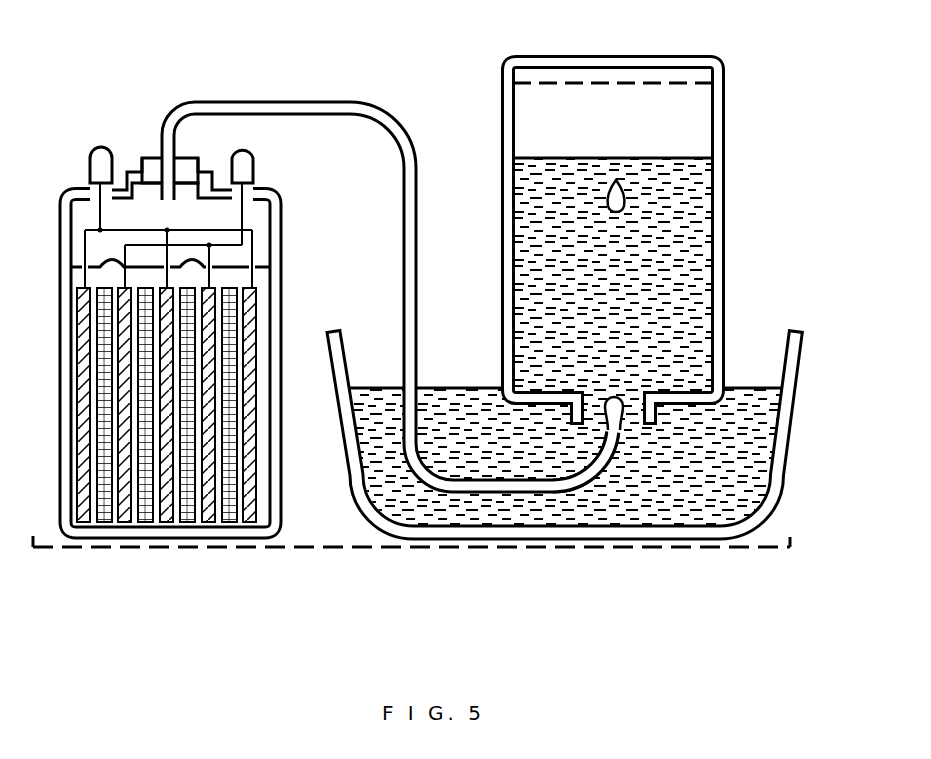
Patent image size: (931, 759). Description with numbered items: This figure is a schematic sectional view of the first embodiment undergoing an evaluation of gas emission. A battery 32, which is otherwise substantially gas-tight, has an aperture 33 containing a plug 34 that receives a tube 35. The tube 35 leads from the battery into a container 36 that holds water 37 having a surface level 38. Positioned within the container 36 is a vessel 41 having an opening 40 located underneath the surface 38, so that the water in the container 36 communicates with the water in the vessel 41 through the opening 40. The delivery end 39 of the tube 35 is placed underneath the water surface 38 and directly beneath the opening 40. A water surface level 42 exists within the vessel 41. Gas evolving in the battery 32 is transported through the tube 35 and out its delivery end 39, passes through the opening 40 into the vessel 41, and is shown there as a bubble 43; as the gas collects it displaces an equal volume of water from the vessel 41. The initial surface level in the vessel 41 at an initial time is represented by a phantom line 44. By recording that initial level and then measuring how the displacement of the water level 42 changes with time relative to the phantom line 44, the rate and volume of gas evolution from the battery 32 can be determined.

The battery 32 is at (143, 312).
The aperture 33 is at (133, 160).
The plug 34 is at (150, 158).
The tube 35 is at (222, 101).
The container 36 is at (606, 410).
The water 37 is at (742, 468).
The surface level 38 is at (752, 385).
The delivery end 39 is at (607, 466).
The opening 40 is at (633, 398).
The vessel 41 is at (723, 110).
The water surface level 42 is at (530, 157).
The bubble 43 is at (625, 197).
The phantom line 44 is at (672, 82).